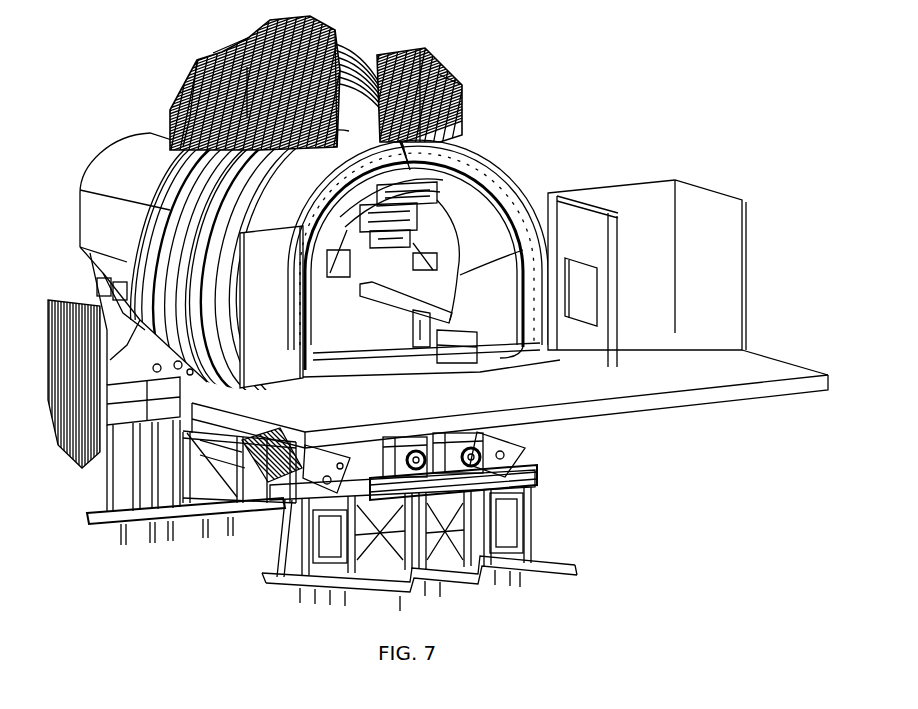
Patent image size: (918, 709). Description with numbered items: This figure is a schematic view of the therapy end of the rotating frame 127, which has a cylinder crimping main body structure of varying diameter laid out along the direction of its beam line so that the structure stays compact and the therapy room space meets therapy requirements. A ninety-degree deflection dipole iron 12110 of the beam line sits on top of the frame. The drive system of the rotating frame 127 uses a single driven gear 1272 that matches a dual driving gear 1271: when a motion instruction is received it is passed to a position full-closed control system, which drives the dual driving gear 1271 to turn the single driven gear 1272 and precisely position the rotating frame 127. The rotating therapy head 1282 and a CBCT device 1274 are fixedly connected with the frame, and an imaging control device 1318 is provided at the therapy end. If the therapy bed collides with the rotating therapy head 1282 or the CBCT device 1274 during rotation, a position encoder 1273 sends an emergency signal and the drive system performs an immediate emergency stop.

The rotating frame 127 is at (180, 205).
The 90-degree deflection dipole iron 12110 is at (374, 40).
The single driven gear 1272 is at (440, 182).
The rotating therapy head 1282 is at (448, 195).
The imaging control device 1318 is at (455, 300).
The dual driving gear 1271 is at (380, 447).
The position encoder 1273 is at (517, 453).
The CBCT device 1274 is at (213, 512).